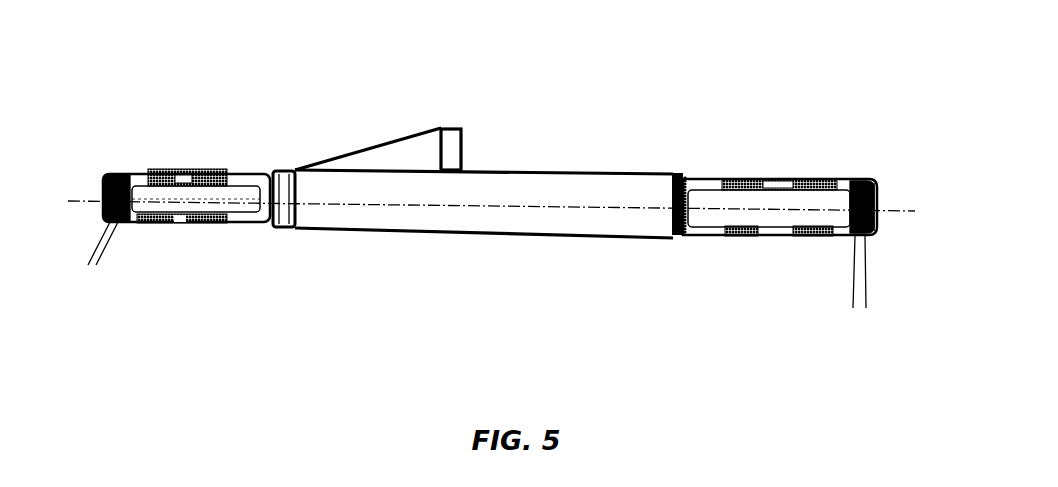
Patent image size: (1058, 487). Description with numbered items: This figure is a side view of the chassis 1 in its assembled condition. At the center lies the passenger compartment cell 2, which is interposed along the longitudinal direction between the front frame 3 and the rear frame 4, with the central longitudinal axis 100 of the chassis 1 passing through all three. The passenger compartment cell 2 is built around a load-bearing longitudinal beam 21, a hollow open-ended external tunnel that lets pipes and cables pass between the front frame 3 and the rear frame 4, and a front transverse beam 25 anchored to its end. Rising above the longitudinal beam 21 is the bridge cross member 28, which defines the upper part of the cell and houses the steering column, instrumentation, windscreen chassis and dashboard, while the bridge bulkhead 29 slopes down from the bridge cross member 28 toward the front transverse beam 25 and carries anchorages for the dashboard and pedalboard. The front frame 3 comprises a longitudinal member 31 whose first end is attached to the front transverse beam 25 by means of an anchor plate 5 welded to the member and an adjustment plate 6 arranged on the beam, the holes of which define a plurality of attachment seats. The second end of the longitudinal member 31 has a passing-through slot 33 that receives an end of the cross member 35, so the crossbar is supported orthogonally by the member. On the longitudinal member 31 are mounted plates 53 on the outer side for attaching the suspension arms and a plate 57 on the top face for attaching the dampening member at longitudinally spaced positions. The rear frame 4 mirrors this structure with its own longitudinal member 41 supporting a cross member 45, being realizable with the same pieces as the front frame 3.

The chassis 1 is at (275, 67).
The passenger compartment cell 2 is at (443, 258).
The front frame 3 is at (143, 145).
The rear frame 4 is at (813, 147).
The anchor plate 5 is at (270, 223).
The adjustment plate 6 is at (277, 227).
The longitudinal beam 21 is at (543, 193).
The front transverse beam 25 is at (287, 180).
The bridge cross member 28 is at (452, 137).
The bridge bulkhead 29 is at (398, 153).
The longitudinal member 31 is at (145, 232).
The passing-through slot 33 is at (474, 280).
The cross member 35 is at (105, 183).
The longitudinal member 41 is at (857, 158).
The cross member 45 is at (880, 190).
The plate 53 is at (200, 223).
The plate 57 is at (167, 172).
The central longitudinal axis 100 is at (333, 207).